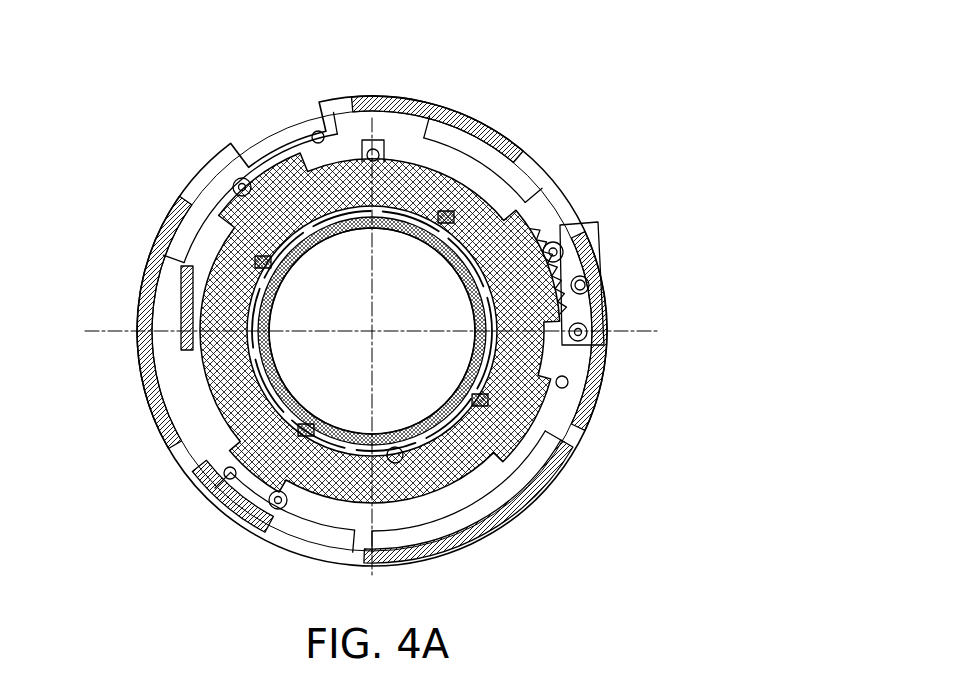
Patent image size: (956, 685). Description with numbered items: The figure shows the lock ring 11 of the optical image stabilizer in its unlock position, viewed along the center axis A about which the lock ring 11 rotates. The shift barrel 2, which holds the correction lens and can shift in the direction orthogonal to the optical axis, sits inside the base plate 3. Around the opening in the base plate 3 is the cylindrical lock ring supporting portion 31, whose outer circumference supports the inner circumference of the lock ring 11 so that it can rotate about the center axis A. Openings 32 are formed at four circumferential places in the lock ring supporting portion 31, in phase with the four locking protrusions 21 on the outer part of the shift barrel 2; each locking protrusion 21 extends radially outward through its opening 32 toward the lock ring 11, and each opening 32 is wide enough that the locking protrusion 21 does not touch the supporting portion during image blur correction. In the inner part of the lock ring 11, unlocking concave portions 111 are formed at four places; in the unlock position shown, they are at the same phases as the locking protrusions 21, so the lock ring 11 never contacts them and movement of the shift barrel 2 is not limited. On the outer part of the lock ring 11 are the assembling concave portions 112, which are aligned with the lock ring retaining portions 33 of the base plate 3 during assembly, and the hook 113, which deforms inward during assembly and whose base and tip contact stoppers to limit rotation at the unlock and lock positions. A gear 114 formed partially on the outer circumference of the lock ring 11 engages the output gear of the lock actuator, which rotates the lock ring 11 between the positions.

The shift barrel 2 is at (422, 430).
The base plate 3 is at (502, 520).
The lock ring 11 is at (520, 348).
The locking protrusions 21 is at (452, 215).
The lock ring supporting portion 31 is at (530, 245).
The openings 32 is at (272, 252).
The lock ring retaining portions 33 is at (372, 140).
The unlocking concave portions 111 is at (242, 225).
The assembling concave portions 112 is at (412, 165).
The hook 113 is at (187, 290).
The gear 114 is at (556, 273).
The center axis A is at (372, 331).